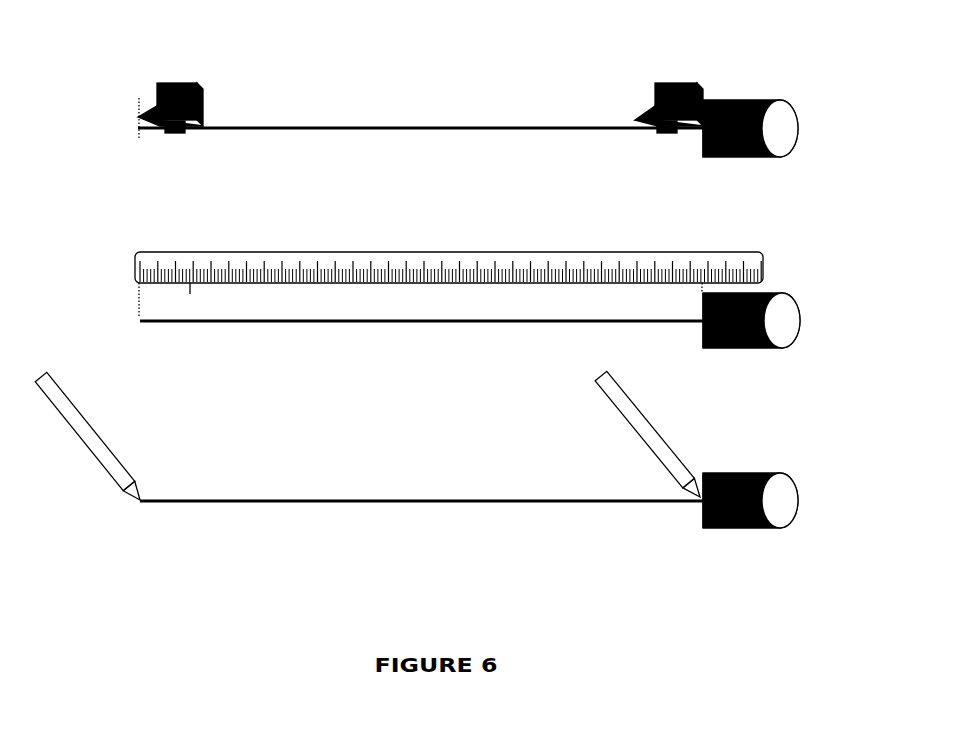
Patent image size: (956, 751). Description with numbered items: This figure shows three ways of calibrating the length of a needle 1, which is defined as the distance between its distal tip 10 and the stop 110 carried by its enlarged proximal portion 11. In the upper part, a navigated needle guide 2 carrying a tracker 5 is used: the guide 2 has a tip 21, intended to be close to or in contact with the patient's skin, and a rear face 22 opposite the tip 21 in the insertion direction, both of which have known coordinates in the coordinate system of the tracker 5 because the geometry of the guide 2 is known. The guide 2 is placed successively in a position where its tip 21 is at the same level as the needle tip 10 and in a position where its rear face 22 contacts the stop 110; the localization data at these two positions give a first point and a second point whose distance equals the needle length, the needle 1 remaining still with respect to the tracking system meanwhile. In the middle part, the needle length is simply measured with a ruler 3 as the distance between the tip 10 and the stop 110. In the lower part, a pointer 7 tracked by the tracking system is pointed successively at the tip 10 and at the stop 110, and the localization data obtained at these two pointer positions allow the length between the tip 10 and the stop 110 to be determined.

The needle 1 is at (420, 128).
The needle guide 2 is at (428, 73).
The ruler 3 is at (765, 262).
The tracker 5 is at (172, 88).
The pointer 7 is at (92, 423).
The distal tip 10 is at (136, 132).
The proximal portion 11 is at (719, 348).
The tip 21 is at (135, 115).
The rear face 22 is at (198, 107).
The stop 110 is at (702, 141).